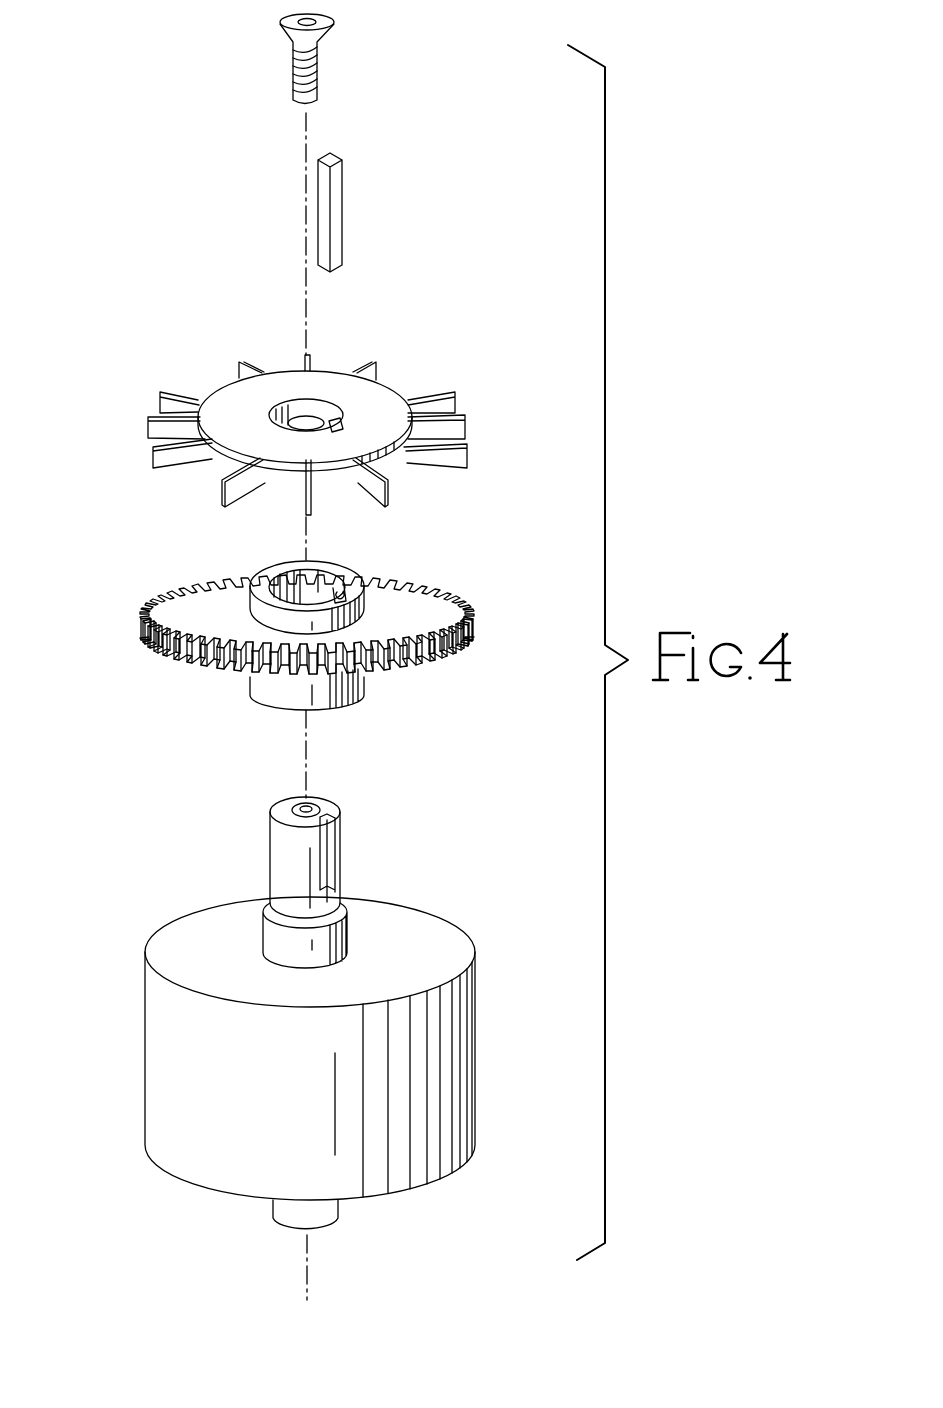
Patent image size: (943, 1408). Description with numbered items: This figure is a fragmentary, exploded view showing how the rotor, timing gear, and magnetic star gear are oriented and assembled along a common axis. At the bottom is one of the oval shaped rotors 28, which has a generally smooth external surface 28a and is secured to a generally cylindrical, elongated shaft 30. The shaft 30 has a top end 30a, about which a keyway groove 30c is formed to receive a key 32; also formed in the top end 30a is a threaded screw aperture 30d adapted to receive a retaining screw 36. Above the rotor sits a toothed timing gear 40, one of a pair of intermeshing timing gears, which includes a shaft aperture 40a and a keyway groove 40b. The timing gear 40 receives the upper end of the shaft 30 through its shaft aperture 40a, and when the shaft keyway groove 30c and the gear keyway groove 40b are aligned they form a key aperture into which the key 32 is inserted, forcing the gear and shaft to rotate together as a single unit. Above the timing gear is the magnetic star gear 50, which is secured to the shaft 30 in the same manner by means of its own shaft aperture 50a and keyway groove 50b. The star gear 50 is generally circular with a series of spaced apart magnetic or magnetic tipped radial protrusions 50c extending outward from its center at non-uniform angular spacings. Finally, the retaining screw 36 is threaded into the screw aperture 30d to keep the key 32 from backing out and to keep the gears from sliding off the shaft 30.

The rotor 28 is at (260, 1063).
The external surface 28a is at (193, 1095).
The shaft 30 is at (297, 859).
The top end 30a is at (287, 852).
The keyway groove 30c is at (337, 840).
The threaded screw aperture 30d is at (312, 806).
The key 32 is at (338, 225).
The retaining screw 36 is at (315, 62).
The timing gear 40 is at (304, 615).
The shaft aperture 40a is at (328, 590).
The keyway groove 40b is at (340, 580).
The magnetic star gear 50 is at (326, 409).
The shaft aperture 50a is at (312, 409).
The keyway groove 50b is at (333, 410).
The radial protrusions 50c is at (153, 452).